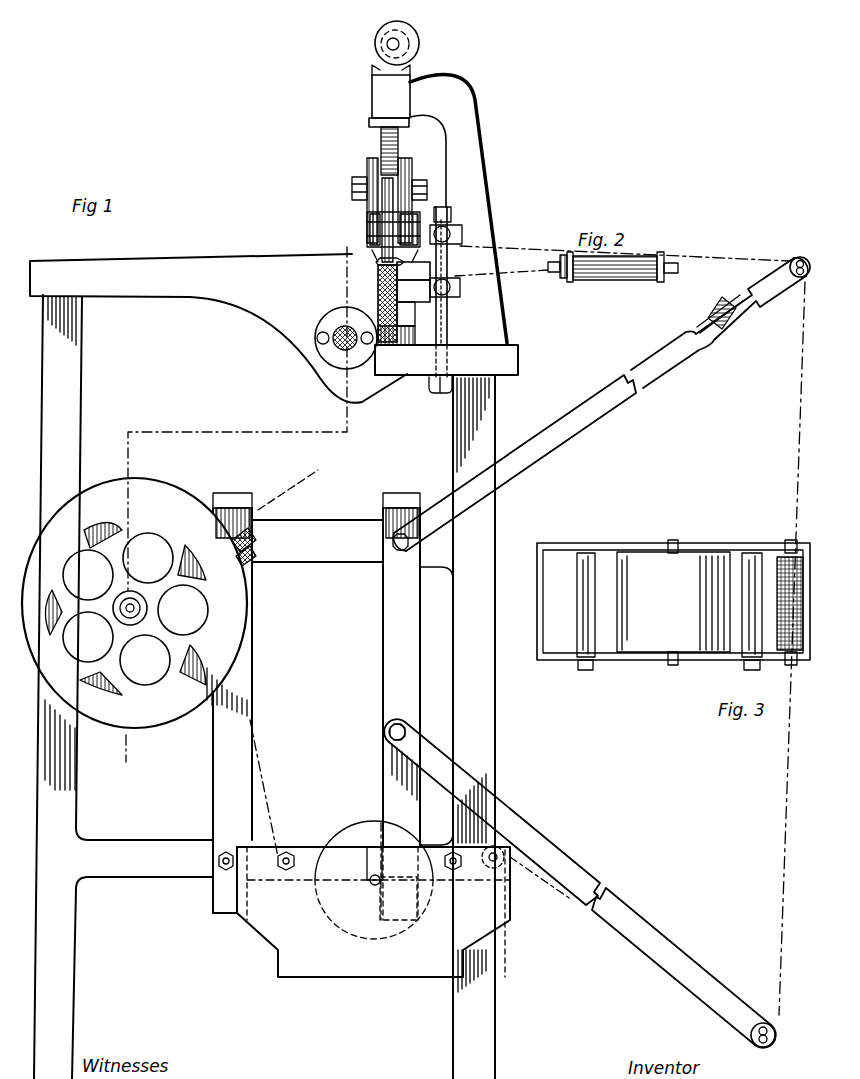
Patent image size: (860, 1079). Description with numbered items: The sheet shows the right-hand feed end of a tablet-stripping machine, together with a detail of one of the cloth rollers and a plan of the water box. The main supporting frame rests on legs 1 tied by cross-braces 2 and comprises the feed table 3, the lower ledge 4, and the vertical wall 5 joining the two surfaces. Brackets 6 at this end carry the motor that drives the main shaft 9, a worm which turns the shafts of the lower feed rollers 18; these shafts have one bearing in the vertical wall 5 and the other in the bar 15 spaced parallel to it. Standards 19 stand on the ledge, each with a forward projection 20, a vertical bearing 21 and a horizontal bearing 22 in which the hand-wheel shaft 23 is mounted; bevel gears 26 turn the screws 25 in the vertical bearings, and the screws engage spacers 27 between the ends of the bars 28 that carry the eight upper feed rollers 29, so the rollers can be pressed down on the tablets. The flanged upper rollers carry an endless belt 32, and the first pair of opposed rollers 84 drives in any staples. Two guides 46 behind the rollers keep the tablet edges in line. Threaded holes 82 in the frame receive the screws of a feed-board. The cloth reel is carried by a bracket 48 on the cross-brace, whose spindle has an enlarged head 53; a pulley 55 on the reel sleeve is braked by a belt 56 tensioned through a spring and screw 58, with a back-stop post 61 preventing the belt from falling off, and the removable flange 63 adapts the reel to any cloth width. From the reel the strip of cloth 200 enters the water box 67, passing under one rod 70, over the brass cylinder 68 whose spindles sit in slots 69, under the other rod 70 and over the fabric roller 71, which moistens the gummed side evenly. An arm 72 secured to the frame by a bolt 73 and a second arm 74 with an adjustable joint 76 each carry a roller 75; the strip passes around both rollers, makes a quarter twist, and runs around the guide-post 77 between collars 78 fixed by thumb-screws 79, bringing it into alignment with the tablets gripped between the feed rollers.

In FIG. 1, the legs 1 is at (72, 995).
In FIG. 1, the cross-braces 2 is at (318, 568).
In FIG. 1, the feed table 3 is at (206, 255).
In FIG. 1, the ledge 4 is at (518, 345).
In FIG. 1, the vertical wall 5 is at (396, 292).
In FIG. 1, the brackets 6 is at (236, 492).
In FIG. 1, the main shaft 9 is at (335, 347).
In FIG. 1, the bar 15 is at (378, 318).
In FIG. 1, the block 18 is at (398, 272).
In FIG. 1, the standards 19 is at (492, 209).
In FIG. 1, the forward projection 20 is at (440, 85).
In FIG. 1, the vertical bearing 21 is at (370, 104).
In FIG. 1, the horizontal bearing 22 is at (412, 36).
In FIG. 1, the shaft 23 is at (386, 45).
In FIG. 1, the screws 25 is at (380, 150).
In FIG. 1, the bevel gears 26 is at (368, 69).
In FIG. 1, the spacers 27 is at (380, 185).
In FIG. 1, the bars 28 is at (370, 160).
In FIG. 1, the upper feed rollers 29 is at (368, 240).
In FIG. 1, the endless belt 32 is at (372, 252).
In FIG. 1, the guides 46 is at (376, 262).
In FIG. 1, the bracket 48 is at (258, 552).
In FIG. 1, the enlarged head 53 is at (134, 630).
In FIG. 1, the pulley 55 is at (108, 590).
In FIG. 1, the belt 56 is at (150, 606).
In FIG. 1, the screw 58 is at (255, 528).
In FIG. 1, the back-stop post 61 is at (148, 614).
In FIG. 1, the flange 63 is at (158, 736).
In FIG. 1, the water box 67 is at (258, 940).
In FIG. 3, the water box 67 is at (612, 662).
In FIG. 1, the brass cylinder 68 is at (364, 825).
In FIG. 3, the brass cylinder 68 is at (672, 664).
In FIG. 1, the slots 69 is at (364, 866).
In FIG. 1, the rods 70 is at (286, 870).
In FIG. 3, the rods 70 is at (578, 612).
In FIG. 1, the roller 71 is at (500, 848).
In FIG. 3, the roller 71 is at (778, 560).
In FIG. 1, the arm 72 is at (590, 855).
In FIG. 1, the bolt 73 is at (384, 733).
In FIG. 1, the arm 74 is at (548, 456).
In FIG. 2, the arm 74 is at (564, 280).
In FIG. 1, the rollers 75 is at (806, 260).
In FIG. 2, the rollers 75 is at (620, 284).
In FIG. 1, the adjustable joint 76 is at (732, 326).
In FIG. 1, the post 77 is at (455, 316).
In FIG. 1, the collars 78 is at (462, 238).
In FIG. 1, the thumb-screws 79 is at (463, 292).
In FIG. 1, the threaded holes 82 is at (85, 283).
In FIG. 1, the rollers 84 is at (432, 200).
In FIG. 1, the strip of cloth 200 is at (527, 252).